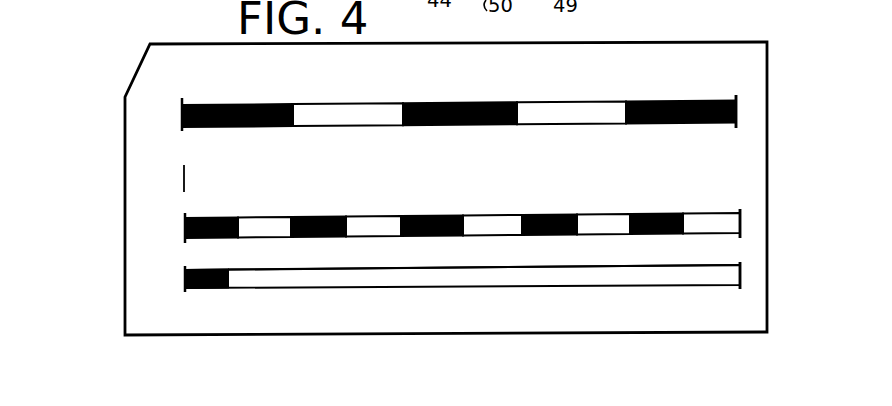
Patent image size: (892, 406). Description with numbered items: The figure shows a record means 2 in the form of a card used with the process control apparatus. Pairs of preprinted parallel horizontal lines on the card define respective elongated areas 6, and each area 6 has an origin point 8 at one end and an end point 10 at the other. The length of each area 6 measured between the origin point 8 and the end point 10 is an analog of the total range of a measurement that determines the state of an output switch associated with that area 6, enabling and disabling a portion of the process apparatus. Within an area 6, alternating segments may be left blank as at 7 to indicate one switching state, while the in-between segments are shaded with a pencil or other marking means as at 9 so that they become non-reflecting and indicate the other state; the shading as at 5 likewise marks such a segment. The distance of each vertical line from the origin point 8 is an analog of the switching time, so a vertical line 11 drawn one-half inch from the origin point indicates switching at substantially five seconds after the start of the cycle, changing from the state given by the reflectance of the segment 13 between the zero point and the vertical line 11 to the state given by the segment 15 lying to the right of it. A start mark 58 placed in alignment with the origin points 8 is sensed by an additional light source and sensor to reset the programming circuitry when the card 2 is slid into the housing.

The record means 2 is at (104, 140).
The origin point 8 is at (440, 208).
The end point 10 is at (740, 112).
The elongated area 6 is at (376, 218).
The opaque segment 5 is at (246, 218).
The blank segment 7 is at (262, 218).
The shaded segment 9 is at (313, 218).
The vertical line 11 is at (230, 270).
The segment 13 is at (198, 288).
The segment 15 is at (247, 285).
The start mark 58 is at (186, 172).